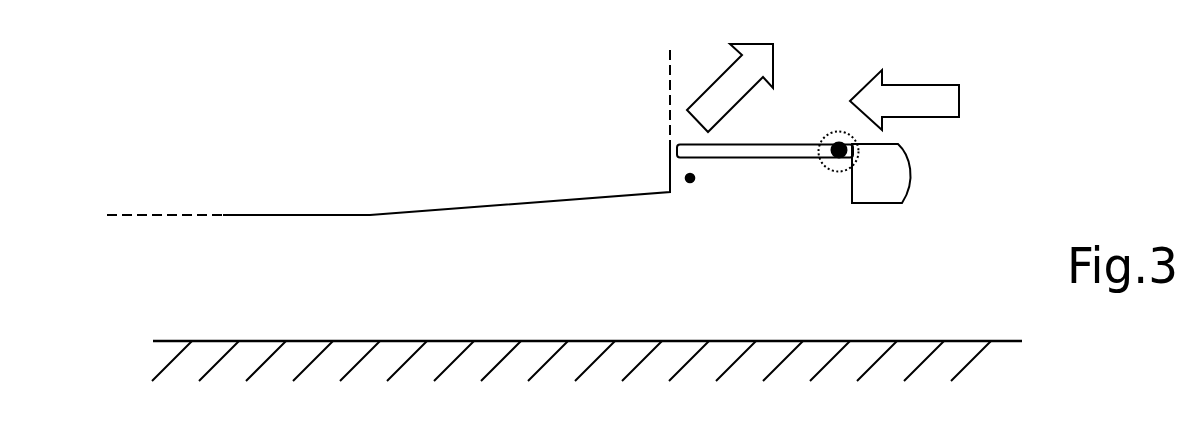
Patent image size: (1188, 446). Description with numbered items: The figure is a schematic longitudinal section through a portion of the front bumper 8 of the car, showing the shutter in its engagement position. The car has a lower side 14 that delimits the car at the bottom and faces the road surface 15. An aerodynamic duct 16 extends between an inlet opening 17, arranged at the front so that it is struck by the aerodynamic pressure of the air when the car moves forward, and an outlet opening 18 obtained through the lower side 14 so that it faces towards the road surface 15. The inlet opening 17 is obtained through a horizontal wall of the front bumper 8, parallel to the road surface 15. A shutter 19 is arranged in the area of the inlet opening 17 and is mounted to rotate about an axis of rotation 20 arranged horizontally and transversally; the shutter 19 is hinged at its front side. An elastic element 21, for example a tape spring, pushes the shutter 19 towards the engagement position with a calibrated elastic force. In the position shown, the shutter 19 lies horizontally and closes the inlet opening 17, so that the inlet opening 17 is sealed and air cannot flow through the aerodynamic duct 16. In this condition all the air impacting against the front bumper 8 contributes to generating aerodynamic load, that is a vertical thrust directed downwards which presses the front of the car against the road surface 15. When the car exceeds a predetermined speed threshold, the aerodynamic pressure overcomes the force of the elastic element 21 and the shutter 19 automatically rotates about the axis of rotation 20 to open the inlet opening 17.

The front bumper 8 is at (878, 35).
The lower side 14 is at (367, 214).
The road surface 15 is at (538, 358).
The aerodynamic duct 16 is at (690, 184).
The inlet opening 17 is at (685, 130).
The outlet opening 18 is at (732, 200).
The shutter 19 is at (763, 153).
The axis of rotation 20 is at (839, 168).
The elastic element 21 is at (837, 130).